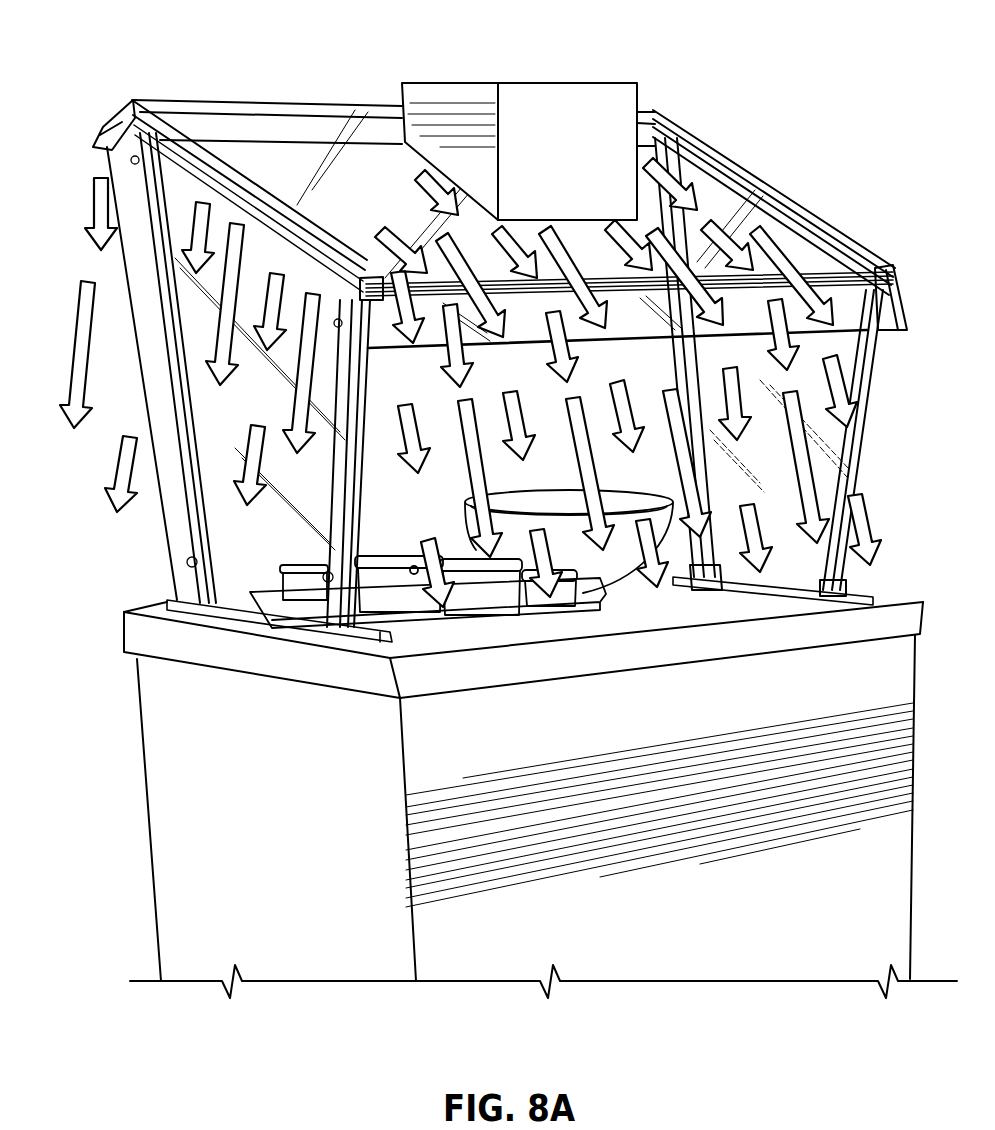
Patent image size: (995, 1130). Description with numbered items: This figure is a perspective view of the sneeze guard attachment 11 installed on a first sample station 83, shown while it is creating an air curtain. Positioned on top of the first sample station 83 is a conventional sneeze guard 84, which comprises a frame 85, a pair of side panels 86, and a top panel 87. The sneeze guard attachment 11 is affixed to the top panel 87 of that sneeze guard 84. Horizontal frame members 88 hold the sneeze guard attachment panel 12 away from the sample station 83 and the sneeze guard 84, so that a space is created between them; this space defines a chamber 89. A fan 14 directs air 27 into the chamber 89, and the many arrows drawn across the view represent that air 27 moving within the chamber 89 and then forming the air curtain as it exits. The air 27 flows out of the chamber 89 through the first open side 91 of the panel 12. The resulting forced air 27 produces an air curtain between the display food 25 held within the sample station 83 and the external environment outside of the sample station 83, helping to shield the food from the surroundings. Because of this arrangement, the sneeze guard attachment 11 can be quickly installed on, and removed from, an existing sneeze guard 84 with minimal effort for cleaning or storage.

The sneeze guard attachment 11 is at (788, 118).
The sneeze guard attachment panel 12 is at (375, 160).
The fan 14 is at (560, 83).
The display food 25 is at (398, 580).
The air 27 is at (383, 228).
The first sample station 83 is at (900, 393).
The sneeze guard 84 is at (86, 163).
The frame 85 is at (140, 366).
The side panels 86 is at (230, 538).
The top panel 87 is at (273, 160).
The horizontal frame members 88 is at (152, 128).
The chamber 89 is at (898, 300).
The first open side 91 is at (421, 348).